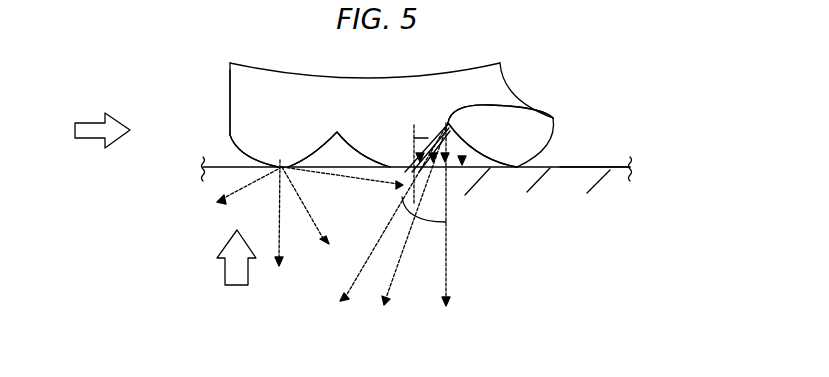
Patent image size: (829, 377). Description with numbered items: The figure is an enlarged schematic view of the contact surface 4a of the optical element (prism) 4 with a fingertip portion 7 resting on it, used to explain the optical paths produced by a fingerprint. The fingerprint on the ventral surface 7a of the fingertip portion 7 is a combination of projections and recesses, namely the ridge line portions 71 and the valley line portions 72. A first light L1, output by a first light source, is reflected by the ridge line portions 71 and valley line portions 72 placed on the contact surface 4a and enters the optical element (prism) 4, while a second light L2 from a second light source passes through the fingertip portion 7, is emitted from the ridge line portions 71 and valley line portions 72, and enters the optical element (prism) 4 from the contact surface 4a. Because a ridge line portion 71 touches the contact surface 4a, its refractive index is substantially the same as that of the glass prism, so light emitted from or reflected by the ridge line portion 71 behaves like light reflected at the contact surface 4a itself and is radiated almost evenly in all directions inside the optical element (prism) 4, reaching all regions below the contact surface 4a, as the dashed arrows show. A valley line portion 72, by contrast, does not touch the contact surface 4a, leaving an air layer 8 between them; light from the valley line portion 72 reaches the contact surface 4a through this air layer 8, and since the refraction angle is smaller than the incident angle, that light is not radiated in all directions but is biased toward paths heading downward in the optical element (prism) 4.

The optical element (prism) 4 is at (567, 197).
The contact surface 4a is at (602, 166).
The fingertip portion 7 is at (547, 138).
The ventral surface 7a is at (226, 152).
The air layer 8 is at (465, 170).
The ridge line portion 71 is at (282, 152).
The valley line portion 72 is at (505, 105).
The first light L1 is at (236, 272).
The second light L2 is at (85, 130).